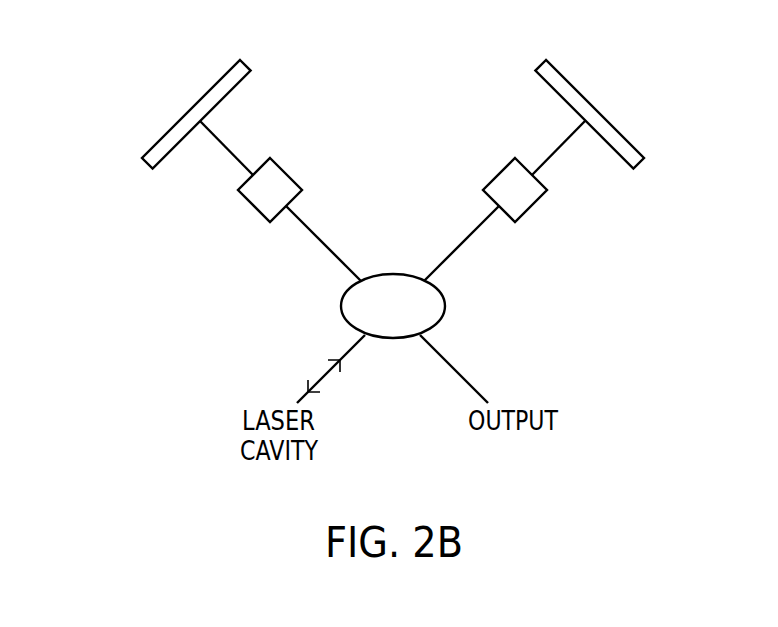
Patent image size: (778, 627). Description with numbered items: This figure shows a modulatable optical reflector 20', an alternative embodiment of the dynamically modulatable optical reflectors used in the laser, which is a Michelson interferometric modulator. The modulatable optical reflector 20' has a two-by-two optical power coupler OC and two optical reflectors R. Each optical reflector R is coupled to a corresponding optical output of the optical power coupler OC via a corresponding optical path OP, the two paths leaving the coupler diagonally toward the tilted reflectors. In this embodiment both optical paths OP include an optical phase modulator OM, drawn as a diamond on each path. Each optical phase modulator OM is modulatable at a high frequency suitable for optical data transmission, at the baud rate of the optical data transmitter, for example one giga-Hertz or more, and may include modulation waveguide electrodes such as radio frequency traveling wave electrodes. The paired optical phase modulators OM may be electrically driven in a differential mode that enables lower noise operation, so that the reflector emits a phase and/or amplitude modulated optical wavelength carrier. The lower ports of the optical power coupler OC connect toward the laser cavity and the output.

The modulatable optical reflector 20' is at (662, 381).
The optical reflector R is at (152, 170).
The optical phase modulator OM is at (252, 204).
The optical path OP is at (224, 144).
The 2×2 optical power coupler OC is at (412, 318).